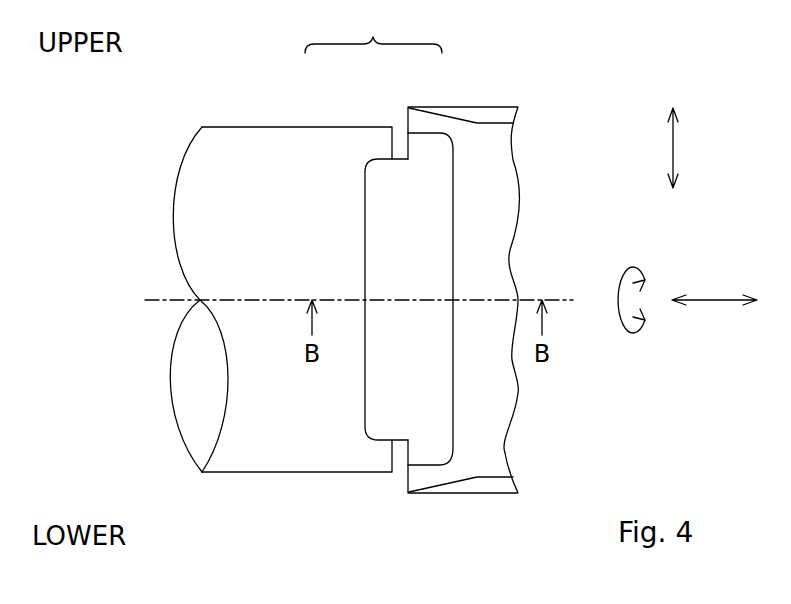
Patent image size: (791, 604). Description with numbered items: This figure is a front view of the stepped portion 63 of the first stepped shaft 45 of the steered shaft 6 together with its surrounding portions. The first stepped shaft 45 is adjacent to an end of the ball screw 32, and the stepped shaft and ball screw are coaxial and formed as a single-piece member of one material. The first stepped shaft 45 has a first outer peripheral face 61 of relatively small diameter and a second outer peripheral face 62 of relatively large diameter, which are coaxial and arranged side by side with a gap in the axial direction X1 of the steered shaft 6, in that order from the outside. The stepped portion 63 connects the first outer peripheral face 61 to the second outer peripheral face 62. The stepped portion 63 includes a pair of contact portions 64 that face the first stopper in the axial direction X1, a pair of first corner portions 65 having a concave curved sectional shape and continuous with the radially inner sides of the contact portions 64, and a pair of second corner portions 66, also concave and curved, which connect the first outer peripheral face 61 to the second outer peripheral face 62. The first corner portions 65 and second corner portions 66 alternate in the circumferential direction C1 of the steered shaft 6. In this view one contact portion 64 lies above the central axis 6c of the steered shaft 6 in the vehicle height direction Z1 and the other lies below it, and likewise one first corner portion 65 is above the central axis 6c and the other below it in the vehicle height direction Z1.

The steered shaft 6 is at (168, 368).
The central axis 6c is at (560, 299).
The ball screw 32 is at (501, 497).
The first stepped shaft 45 is at (226, 477).
The first outer peripheral face 61 is at (295, 474).
The second outer peripheral face 62 is at (413, 495).
The stepped portion 63 is at (373, 31).
The contact portion 64 is at (408, 108).
The first corner portion 65 is at (406, 133).
The second corner portion 66 is at (380, 173).
The vehicle height direction Z1 is at (676, 147).
The axial direction X1 is at (714, 298).
The circumferential direction C1 is at (628, 270).